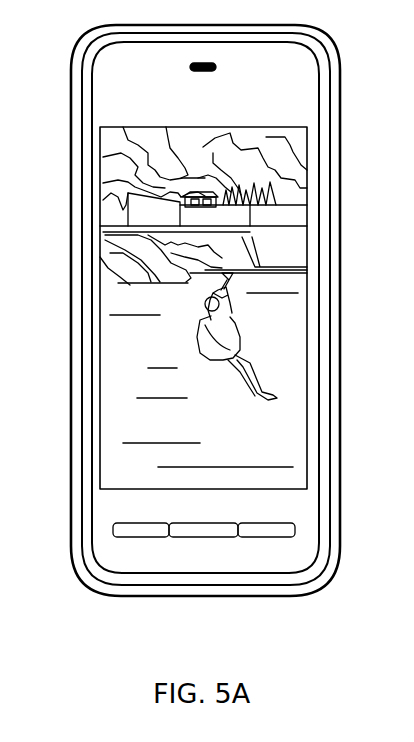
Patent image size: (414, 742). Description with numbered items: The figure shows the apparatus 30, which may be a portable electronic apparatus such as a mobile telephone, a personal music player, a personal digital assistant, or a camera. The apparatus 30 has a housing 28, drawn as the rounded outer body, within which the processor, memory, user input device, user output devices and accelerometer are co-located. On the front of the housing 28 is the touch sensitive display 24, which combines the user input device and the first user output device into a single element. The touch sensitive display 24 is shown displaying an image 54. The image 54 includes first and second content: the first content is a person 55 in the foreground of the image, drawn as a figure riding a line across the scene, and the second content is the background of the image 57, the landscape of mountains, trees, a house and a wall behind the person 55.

The housing 28 is at (335, 56).
The apparatus 30 is at (68, 588).
The touch sensitive display 24 is at (278, 443).
The image 54 is at (115, 291).
The person 55 is at (200, 330).
The background of the image 57 is at (273, 312).